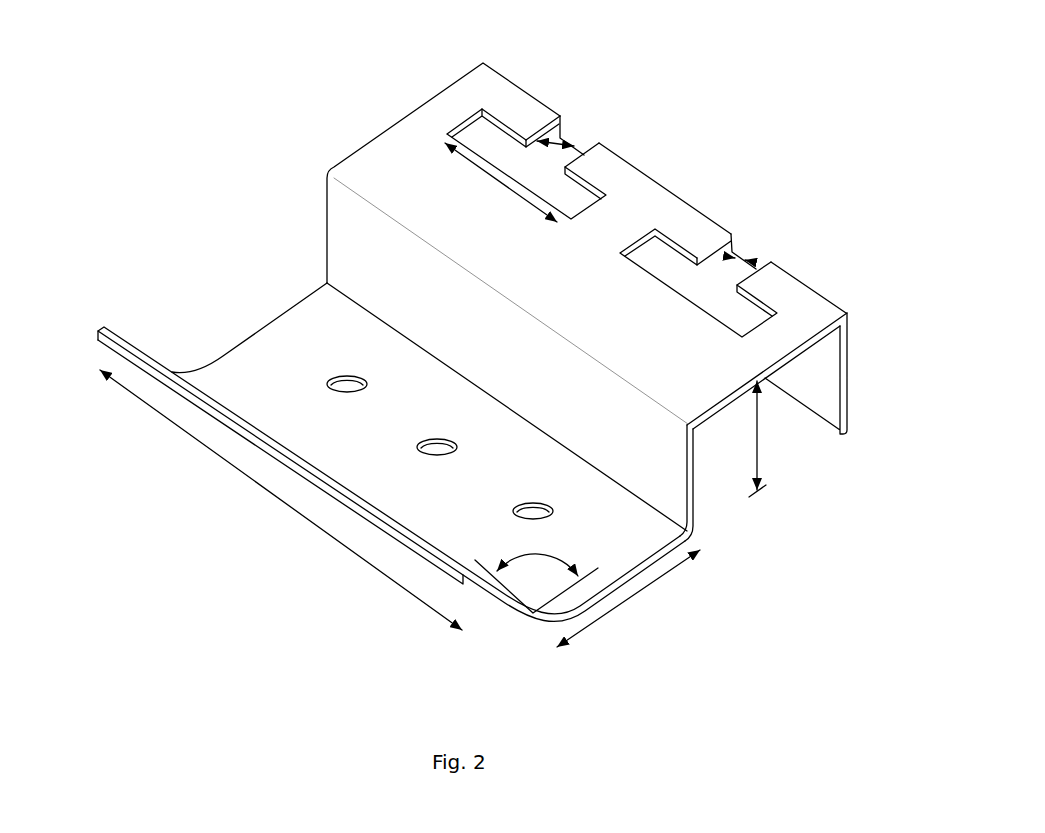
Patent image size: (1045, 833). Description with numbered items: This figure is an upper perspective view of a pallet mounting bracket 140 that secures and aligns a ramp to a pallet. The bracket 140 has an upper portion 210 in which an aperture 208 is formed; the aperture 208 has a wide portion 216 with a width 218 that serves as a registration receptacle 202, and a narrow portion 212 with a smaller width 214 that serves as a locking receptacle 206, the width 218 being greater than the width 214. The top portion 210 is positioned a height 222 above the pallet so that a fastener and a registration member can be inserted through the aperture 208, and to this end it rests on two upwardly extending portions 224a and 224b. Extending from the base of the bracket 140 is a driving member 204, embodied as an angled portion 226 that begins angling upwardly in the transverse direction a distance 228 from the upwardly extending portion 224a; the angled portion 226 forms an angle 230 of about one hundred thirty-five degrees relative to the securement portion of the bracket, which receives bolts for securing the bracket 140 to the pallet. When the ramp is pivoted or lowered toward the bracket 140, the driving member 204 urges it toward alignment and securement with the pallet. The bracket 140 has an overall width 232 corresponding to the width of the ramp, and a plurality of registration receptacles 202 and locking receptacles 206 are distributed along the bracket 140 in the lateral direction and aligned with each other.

The pallet mounting bracket 140 is at (197, 70).
The registration receptacle 202 is at (585, 185).
The driving member 204 is at (130, 330).
The locking receptacle 206 is at (565, 157).
The aperture 208 is at (477, 112).
The upper portion 210 is at (510, 107).
The narrow portion 212 is at (559, 116).
The width of narrow portion 214 is at (576, 139).
The wide portion 216 is at (577, 205).
The width of wide portion 218 is at (492, 180).
The height 222 is at (758, 433).
The upwardly extending portion 224a is at (350, 222).
The upwardly extending portion 224b is at (846, 376).
The angled portion 226 is at (112, 346).
The distance 228 is at (612, 612).
The angle 230 is at (523, 558).
The width 232 is at (275, 500).